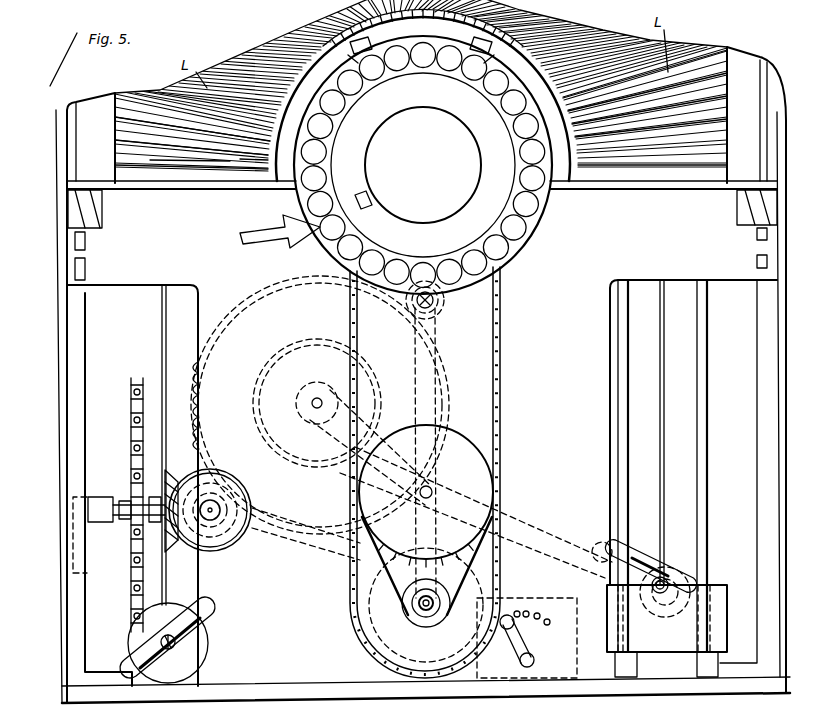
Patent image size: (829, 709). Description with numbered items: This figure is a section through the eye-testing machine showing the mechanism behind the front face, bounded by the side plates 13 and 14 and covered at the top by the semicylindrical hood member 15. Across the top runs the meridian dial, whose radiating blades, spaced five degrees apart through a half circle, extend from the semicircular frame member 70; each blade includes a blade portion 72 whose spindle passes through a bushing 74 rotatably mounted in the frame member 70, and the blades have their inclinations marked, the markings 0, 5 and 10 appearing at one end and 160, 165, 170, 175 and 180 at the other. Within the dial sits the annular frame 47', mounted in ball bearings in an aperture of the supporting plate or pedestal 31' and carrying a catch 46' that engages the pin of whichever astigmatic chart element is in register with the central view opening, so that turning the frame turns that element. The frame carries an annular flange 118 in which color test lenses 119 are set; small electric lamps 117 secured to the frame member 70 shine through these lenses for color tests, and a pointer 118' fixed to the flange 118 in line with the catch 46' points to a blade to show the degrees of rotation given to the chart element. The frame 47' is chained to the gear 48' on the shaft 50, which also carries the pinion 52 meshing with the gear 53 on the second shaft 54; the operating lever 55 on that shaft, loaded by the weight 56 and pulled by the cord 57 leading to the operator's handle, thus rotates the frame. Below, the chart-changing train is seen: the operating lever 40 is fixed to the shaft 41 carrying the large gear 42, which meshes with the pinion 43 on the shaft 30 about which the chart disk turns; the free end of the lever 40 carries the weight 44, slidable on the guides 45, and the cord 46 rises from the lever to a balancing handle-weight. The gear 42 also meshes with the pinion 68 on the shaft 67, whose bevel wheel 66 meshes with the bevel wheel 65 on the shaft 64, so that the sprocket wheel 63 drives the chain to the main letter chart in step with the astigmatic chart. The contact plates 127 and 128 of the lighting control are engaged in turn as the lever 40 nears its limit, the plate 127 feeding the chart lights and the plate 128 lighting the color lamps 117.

The side plate 13 is at (60, 320).
The side plate 14 is at (782, 367).
The semicylindrical cover or hood member 15 is at (765, 68).
The semicircular frame member 70 is at (296, 38).
The blade portion 72 is at (193, 160).
The bushing 74 is at (268, 155).
The electric lamp 117 is at (470, 41).
The annular flange 118 is at (433, 151).
The pointer 118' is at (256, 233).
The color test lenses 119 is at (330, 230).
The catch 46' is at (381, 193).
The annular frame 47' is at (423, 165).
The shaft 30 is at (432, 304).
The pinion 43 is at (440, 300).
The large gear 42 is at (236, 309).
The shaft 41 is at (315, 410).
The contact plate 128 is at (383, 390).
The right inner frame 31' is at (672, 471).
The cord 46 is at (700, 432).
The guides 45 is at (627, 513).
The weight 44 is at (666, 645).
The operating lever 40 is at (552, 500).
The gear 48' is at (418, 472).
The gear 53 is at (467, 451).
The second shaft 54 is at (430, 496).
The shaft 50 is at (420, 605).
The pinion 52 is at (441, 614).
The operating lever 55 is at (312, 578).
The cord 57 is at (161, 346).
The sprocket wheel 63 is at (133, 466).
The shaft 64 is at (118, 523).
The bevel wheel 65 is at (171, 550).
The second bevel wheel 66 is at (196, 472).
The shaft 67 is at (213, 515).
The pinion 68 is at (246, 533).
The contact plate 127 is at (300, 486).
The weight 56 is at (190, 657).
The scale mark 0 is at (185, 166).
The scale mark 5 is at (185, 144).
The scale mark 10 is at (184, 123).
The scale mark 160 is at (659, 73).
The scale mark 165 is at (661, 92).
The scale mark 170 is at (663, 110).
The scale mark 175 is at (665, 131).
The scale mark 180 is at (666, 166).